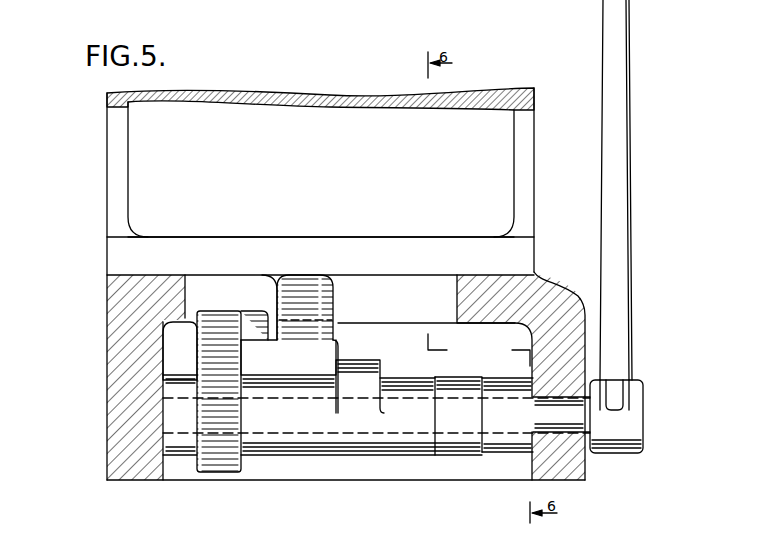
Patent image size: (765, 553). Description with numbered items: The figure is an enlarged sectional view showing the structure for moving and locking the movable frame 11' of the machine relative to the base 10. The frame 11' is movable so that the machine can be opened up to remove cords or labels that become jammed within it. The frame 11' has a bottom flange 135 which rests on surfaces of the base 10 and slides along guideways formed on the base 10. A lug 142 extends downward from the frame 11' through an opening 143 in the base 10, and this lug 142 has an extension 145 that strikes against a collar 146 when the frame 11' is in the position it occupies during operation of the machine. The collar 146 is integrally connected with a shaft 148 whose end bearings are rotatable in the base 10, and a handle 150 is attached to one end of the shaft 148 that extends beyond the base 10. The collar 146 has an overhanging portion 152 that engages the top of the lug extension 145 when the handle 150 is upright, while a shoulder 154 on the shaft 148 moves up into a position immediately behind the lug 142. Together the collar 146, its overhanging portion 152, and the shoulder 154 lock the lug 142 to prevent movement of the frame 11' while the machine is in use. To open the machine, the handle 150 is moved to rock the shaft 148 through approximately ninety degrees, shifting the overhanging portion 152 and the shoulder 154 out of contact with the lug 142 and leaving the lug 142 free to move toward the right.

The base 10 is at (98, 331).
The frame 11' is at (320, 90).
The bottom flange 135 is at (372, 247).
The lug 142 is at (331, 300).
The opening 143 is at (450, 303).
The extension 145 is at (253, 346).
The collar 146 is at (242, 417).
The shaft 148 is at (393, 448).
The handle 150 is at (626, 158).
The overhanging portion 152 is at (257, 326).
The shoulder 154 is at (350, 360).